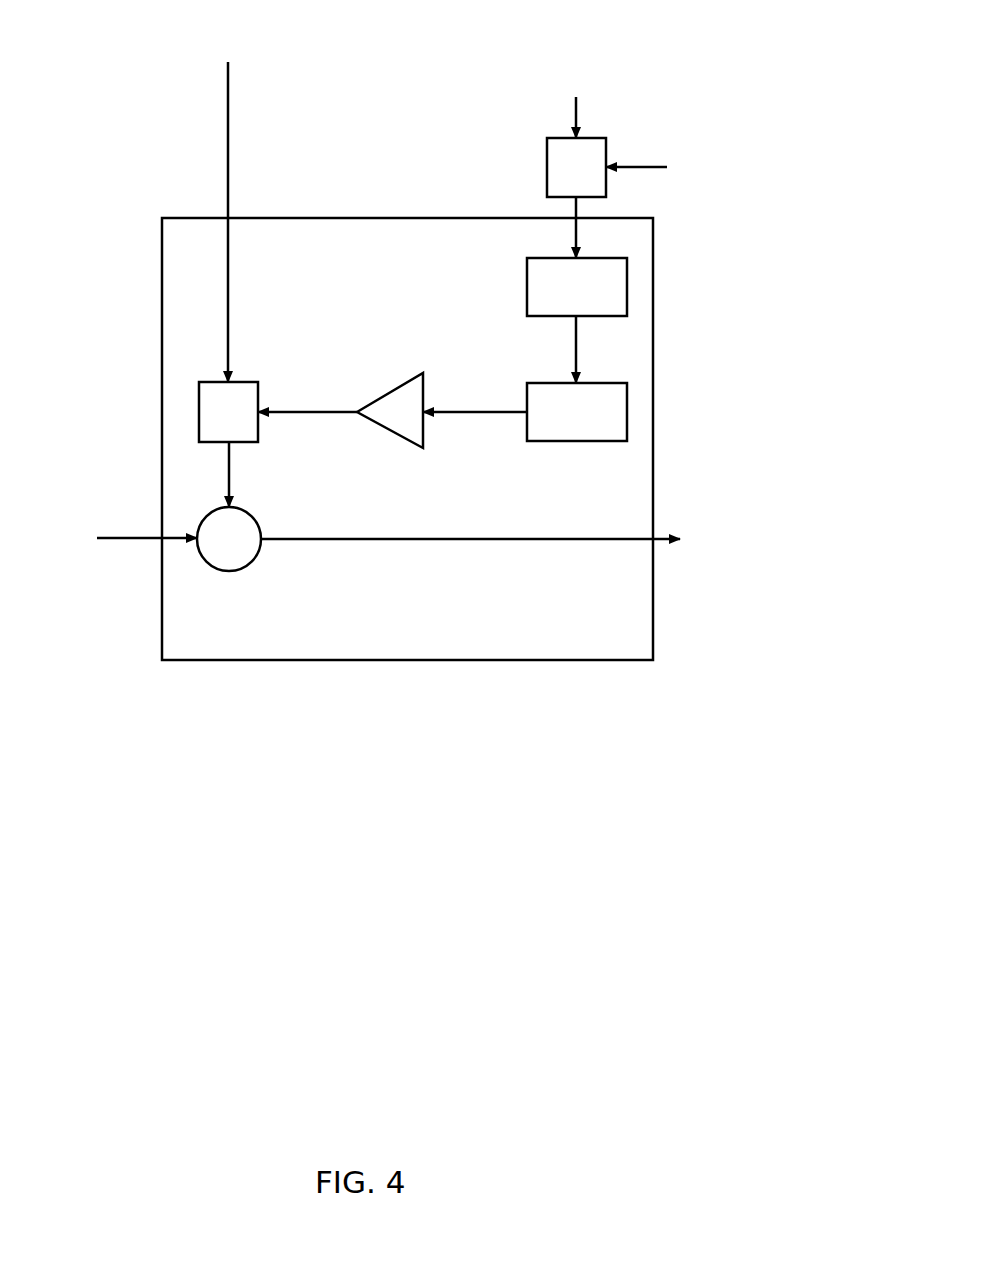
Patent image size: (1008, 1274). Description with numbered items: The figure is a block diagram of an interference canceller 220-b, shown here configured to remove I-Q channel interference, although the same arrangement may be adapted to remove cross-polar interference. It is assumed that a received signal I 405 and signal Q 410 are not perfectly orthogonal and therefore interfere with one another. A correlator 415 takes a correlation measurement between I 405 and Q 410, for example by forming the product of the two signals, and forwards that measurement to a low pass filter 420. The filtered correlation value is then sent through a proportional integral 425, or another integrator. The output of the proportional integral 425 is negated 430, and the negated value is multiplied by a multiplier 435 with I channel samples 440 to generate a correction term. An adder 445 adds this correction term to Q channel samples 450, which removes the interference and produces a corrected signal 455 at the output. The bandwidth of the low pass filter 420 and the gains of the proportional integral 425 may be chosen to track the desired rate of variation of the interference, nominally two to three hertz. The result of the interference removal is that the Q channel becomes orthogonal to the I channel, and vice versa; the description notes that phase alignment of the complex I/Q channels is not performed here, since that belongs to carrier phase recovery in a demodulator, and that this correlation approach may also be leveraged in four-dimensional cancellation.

The interference canceller 220-b is at (712, 904).
The received signal I 405 is at (576, 112).
The signal Q 410 is at (667, 167).
The correlator 415 is at (598, 138).
The low pass filter 420 is at (627, 285).
The proportional integral 425 is at (627, 402).
The negation 430 is at (408, 380).
The multiplier 435 is at (245, 382).
The I channel samples 440 is at (228, 88).
The adder 445 is at (253, 515).
The Q channel samples 450 is at (128, 538).
The corrected signal 455 is at (603, 540).